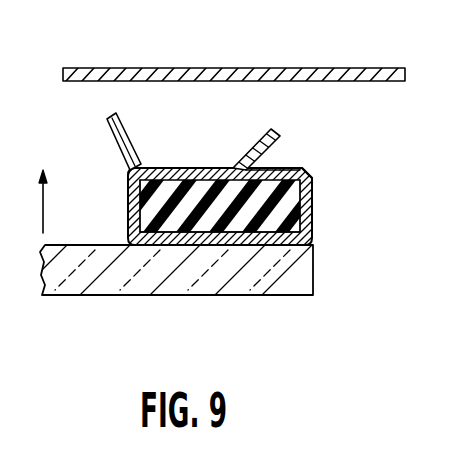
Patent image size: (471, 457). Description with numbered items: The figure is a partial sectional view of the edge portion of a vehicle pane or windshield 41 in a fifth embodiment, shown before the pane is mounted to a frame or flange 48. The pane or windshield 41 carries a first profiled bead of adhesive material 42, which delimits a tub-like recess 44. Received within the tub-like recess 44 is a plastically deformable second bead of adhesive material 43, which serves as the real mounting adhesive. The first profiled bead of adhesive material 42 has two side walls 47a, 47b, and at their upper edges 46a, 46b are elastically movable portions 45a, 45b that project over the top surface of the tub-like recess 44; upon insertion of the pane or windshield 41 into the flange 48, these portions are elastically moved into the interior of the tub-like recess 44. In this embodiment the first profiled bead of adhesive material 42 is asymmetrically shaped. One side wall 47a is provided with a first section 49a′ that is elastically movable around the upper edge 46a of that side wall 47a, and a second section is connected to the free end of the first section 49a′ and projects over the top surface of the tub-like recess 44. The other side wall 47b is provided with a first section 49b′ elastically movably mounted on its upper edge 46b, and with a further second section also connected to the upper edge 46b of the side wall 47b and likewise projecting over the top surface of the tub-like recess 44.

The pane or windshield 41 is at (84, 281).
The first profiled bead of adhesive material 42 is at (325, 224).
The second bead of adhesive material 43 is at (263, 234).
The tub-like recess 44 is at (174, 234).
The elastically movable portion 45a is at (293, 145).
The elastically movable portion 45b is at (153, 140).
The upper edge of side wall 46a is at (313, 173).
The upper edge of side wall 46b is at (122, 174).
The side wall 47a is at (314, 208).
The side wall 47b is at (130, 219).
The flange 48 is at (261, 80).
The first section 49a′ is at (281, 166).
The first section 49b′ is at (193, 163).